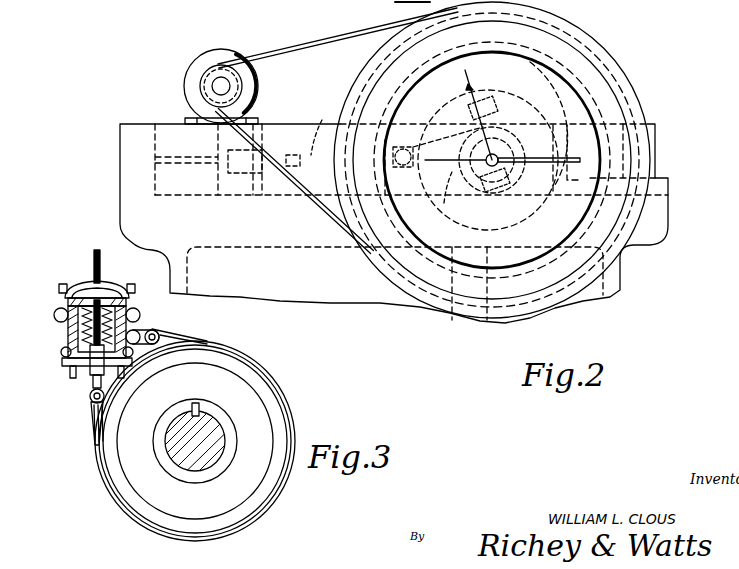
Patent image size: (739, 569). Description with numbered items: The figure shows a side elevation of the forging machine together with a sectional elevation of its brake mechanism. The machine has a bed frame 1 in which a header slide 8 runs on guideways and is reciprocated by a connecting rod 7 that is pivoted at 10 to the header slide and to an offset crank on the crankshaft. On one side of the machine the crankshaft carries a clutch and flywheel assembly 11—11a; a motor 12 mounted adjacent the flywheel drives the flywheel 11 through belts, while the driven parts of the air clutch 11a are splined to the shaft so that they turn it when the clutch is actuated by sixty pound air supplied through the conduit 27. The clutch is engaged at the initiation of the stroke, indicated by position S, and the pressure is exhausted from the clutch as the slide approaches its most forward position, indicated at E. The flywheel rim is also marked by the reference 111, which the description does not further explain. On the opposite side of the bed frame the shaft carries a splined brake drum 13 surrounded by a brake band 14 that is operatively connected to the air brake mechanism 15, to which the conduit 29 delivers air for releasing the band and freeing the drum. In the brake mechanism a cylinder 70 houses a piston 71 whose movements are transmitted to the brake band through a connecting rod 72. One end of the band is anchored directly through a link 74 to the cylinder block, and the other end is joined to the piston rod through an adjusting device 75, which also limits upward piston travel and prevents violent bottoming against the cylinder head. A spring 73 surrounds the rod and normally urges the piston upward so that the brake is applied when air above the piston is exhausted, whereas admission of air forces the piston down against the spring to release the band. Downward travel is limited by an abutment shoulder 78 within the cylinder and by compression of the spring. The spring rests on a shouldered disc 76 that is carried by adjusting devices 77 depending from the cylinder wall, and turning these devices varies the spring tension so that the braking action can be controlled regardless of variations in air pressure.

In FIG. 2, the bed frame 1 is at (146, 211).
In FIG. 2, the connecting rod 7 is at (445, 198).
In FIG. 2, the header slide 8 is at (319, 129).
In FIG. 2, the pivot 10 is at (396, 190).
In FIG. 2, the flywheel 11 is at (337, 127).
In FIG. 2, the clutch 11a is at (412, 6).
In FIG. 2, the motor 12 is at (189, 80).
In FIG. 3, the brake drum 13 is at (183, 348).
In FIG. 3, the brake band 14 is at (208, 343).
In FIG. 3, the air brake mechanism 15 is at (66, 290).
In FIG. 2, the conduit 27 is at (592, 0).
In FIG. 3, the conduit 29 is at (101, 262).
In FIG. 3, the cylinder 70 is at (126, 314).
In FIG. 3, the piston 71 is at (68, 302).
In FIG. 3, the connecting rod 72 is at (80, 334).
In FIG. 3, the spring 73 is at (72, 352).
In FIG. 3, the link 74 is at (149, 335).
In FIG. 3, the adjusting device 75 is at (93, 384).
In FIG. 3, the shouldered disc 76 is at (86, 376).
In FIG. 3, the adjusting devices 77 is at (116, 343).
In FIG. 3, the abutment shoulder 78 is at (78, 318).
In FIG. 2, the pulley flange 111 is at (562, 32).
In FIG. 2, the forward crank position E is at (432, 165).
In FIG. 2, the starting crank position S is at (502, 117).